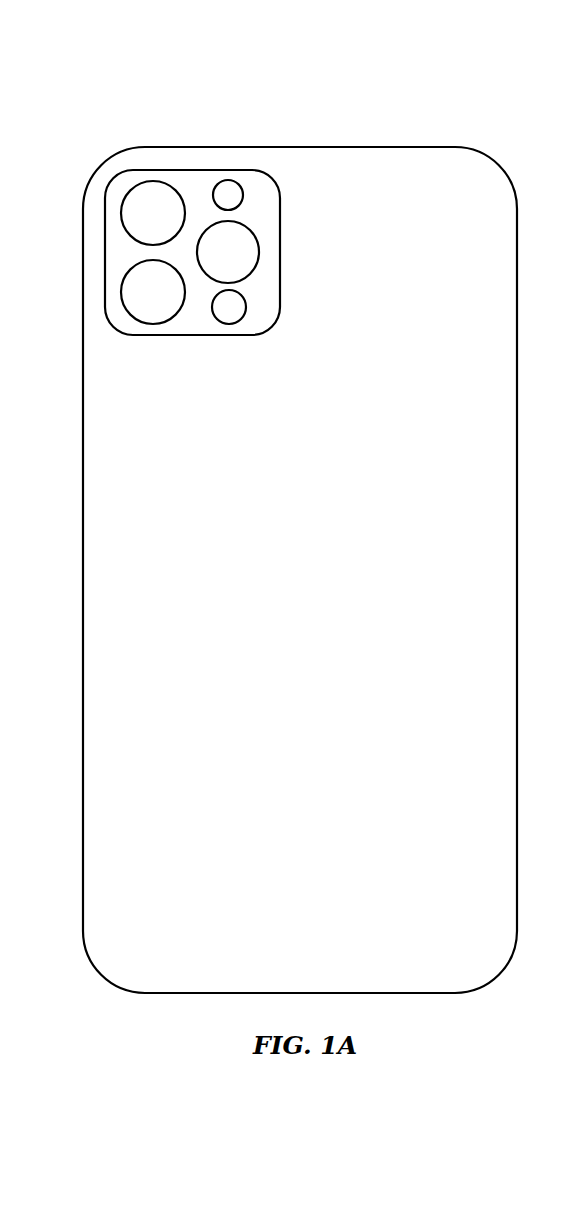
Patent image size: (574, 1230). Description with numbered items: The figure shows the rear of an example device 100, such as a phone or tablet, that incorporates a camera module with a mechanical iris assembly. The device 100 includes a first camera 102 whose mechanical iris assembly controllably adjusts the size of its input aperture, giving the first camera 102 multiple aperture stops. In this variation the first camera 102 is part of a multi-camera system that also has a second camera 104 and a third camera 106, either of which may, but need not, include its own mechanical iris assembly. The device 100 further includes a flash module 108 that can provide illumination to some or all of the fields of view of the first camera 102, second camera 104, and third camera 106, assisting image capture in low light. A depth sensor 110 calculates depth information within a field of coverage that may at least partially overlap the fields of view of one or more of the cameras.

The device 100 is at (491, 80).
The first camera 102 is at (122, 274).
The second camera 104 is at (122, 194).
The third camera 106 is at (204, 228).
The flash module 108 is at (239, 180).
The depth sensor 110 is at (227, 324).